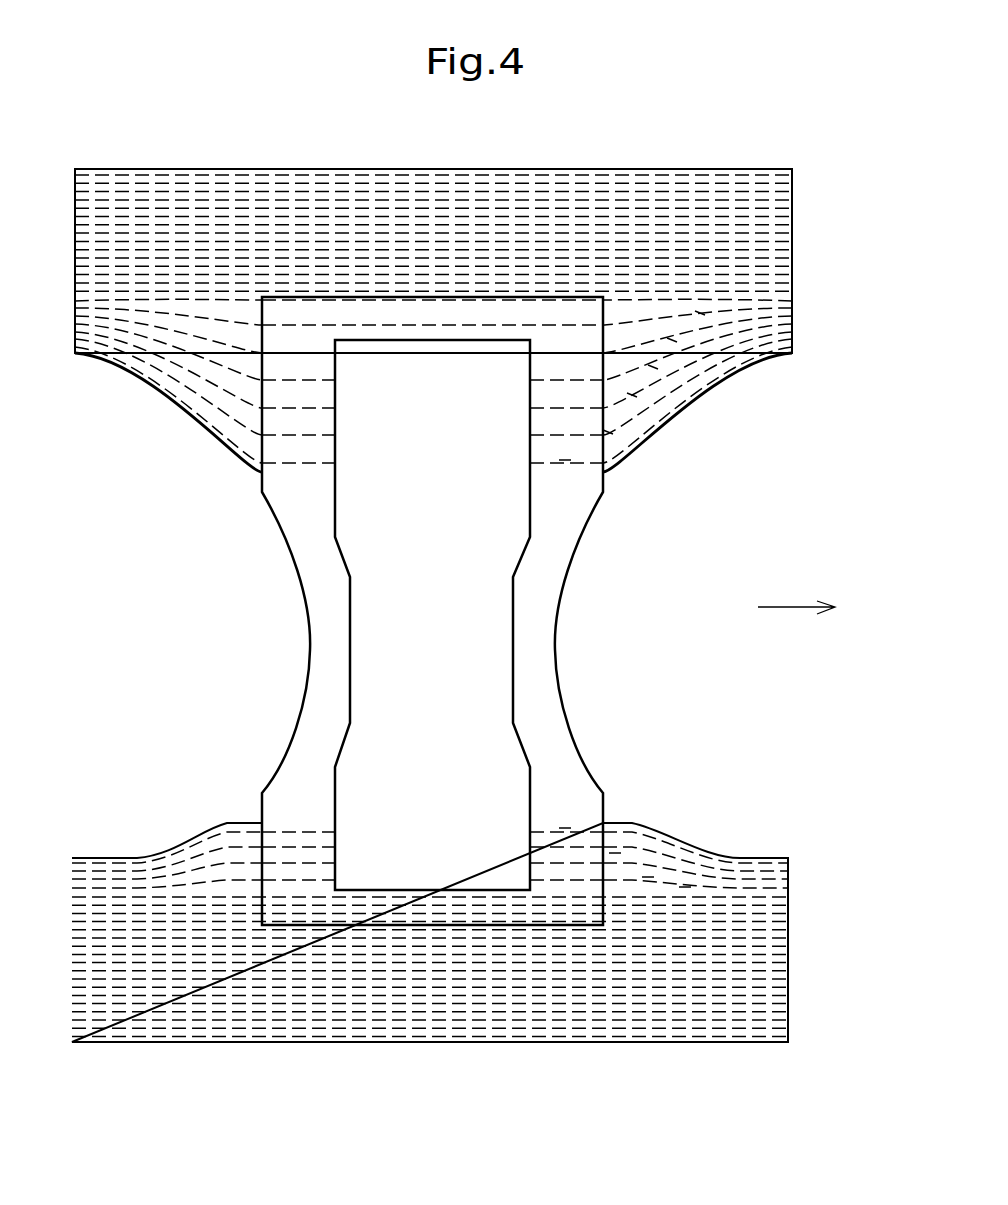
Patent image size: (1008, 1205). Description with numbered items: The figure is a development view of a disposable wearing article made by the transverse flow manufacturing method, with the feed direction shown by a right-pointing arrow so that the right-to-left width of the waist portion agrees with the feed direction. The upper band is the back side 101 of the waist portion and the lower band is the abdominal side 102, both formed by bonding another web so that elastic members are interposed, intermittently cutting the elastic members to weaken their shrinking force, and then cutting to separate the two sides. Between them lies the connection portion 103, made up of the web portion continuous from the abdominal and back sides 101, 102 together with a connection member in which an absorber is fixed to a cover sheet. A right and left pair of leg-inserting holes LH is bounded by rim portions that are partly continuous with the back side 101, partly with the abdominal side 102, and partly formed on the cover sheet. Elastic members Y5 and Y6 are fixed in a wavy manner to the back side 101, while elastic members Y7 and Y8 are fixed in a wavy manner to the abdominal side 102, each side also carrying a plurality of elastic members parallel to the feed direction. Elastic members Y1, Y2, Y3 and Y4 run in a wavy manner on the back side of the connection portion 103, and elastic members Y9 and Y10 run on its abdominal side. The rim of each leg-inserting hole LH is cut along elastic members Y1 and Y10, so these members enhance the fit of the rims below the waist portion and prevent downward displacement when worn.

The back side 101 is at (765, 218).
The abdominal side 102 is at (748, 925).
The connection portion 103 is at (300, 765).
The leg-inserting hole LH is at (178, 402).
The elastic member Y1 is at (565, 460).
The elastic member Y2 is at (608, 432).
The elastic member Y3 is at (632, 395).
The elastic member Y4 is at (653, 367).
The elastic member Y5 is at (672, 340).
The elastic member Y6 is at (700, 313).
The elastic member Y7 is at (685, 887).
The elastic member Y8 is at (648, 877).
The elastic member Y9 is at (615, 853).
The elastic member Y10 is at (565, 828).